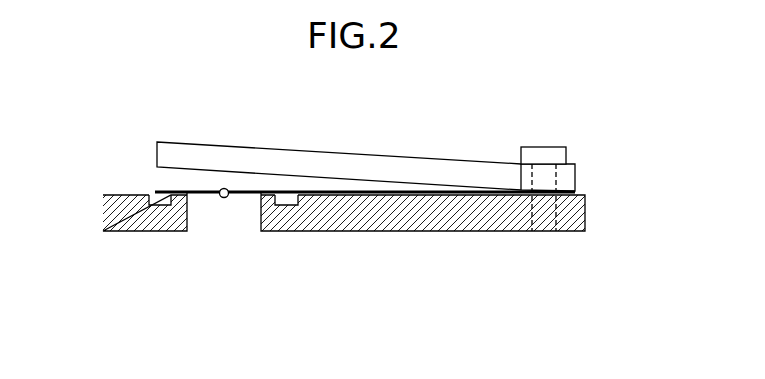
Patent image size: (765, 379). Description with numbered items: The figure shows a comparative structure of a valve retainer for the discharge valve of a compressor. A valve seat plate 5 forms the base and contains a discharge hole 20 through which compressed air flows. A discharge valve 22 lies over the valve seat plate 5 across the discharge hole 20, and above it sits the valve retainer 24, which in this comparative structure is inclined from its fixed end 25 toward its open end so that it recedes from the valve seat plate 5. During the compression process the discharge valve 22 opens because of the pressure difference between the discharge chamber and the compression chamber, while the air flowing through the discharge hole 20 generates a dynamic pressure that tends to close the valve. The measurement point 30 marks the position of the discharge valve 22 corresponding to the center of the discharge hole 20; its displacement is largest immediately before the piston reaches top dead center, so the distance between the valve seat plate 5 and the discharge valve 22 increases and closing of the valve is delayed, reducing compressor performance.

The valve seat plate 5 is at (450, 205).
The discharge hole 20 is at (250, 213).
The discharge valve 22 is at (160, 196).
The valve retainer 24 is at (228, 158).
The fixed end 25 is at (543, 153).
The measurement point 30 is at (223, 198).